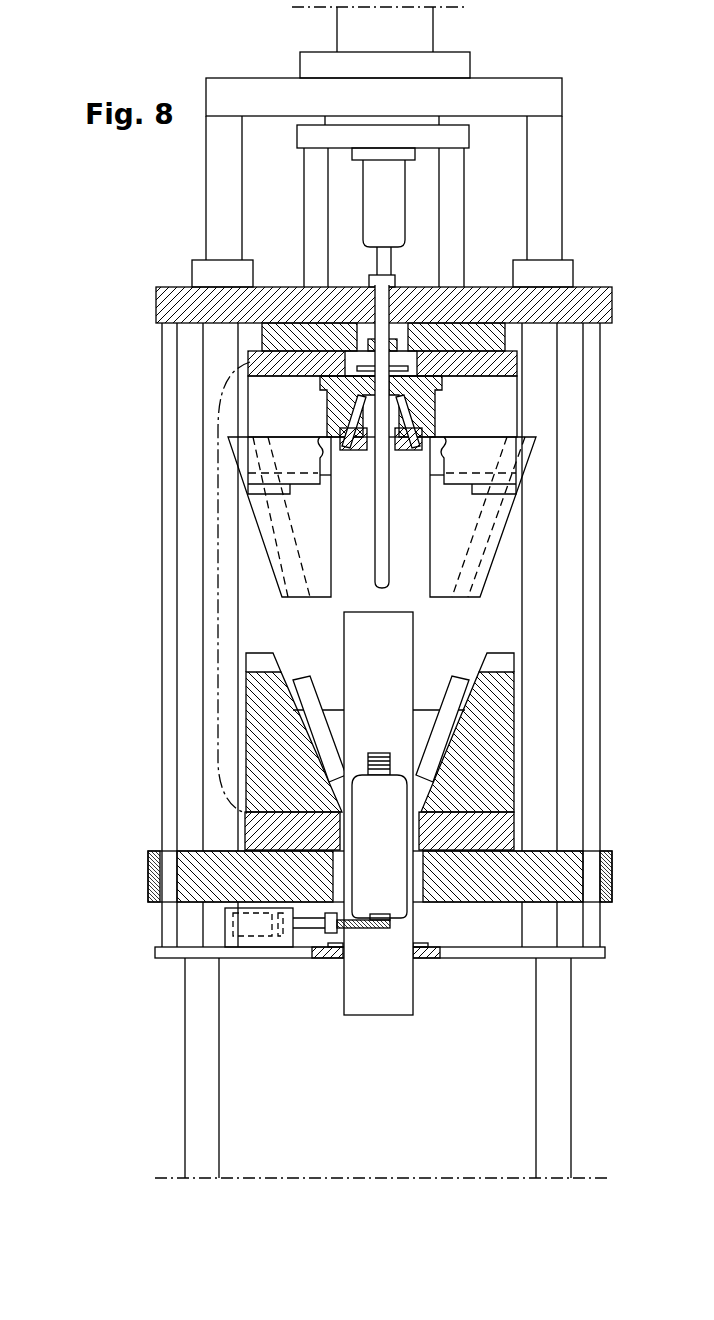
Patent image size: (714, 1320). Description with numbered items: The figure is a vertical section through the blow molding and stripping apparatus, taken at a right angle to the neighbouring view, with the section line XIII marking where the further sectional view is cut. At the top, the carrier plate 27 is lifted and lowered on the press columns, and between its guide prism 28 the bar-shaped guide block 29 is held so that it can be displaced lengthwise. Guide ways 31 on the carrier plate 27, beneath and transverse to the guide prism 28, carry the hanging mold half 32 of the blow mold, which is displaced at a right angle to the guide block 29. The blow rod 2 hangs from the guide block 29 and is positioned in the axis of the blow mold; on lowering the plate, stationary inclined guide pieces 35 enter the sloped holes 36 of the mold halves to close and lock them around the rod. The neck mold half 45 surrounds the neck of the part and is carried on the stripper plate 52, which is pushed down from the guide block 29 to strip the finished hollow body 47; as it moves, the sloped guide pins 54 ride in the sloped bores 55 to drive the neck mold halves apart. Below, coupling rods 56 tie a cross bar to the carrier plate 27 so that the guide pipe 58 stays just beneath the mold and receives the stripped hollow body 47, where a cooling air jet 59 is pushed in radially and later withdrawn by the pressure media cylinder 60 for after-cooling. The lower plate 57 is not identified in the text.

The blow rod 2 is at (374, 530).
The carrier plate 27 is at (250, 362).
The guide prism 28 is at (325, 399).
The guide block 29 is at (323, 420).
The guide ways 31 is at (248, 494).
The mold half 32 is at (320, 548).
The inclined guide piece 35 is at (303, 693).
The sloped hole 36 is at (275, 570).
The neck mold half 45 is at (402, 450).
The hollow body 47 is at (396, 866).
The stripper plate 52 is at (322, 460).
The sloped guide pin 54 is at (438, 411).
The sloped bore 55 is at (433, 457).
The coupling rod 56 is at (165, 730).
The thin plate 57 is at (155, 950).
The guide pipe 58 is at (344, 636).
The cooling air jet 59 is at (370, 927).
The pressure media cylinder 60 is at (225, 918).
The section line XIII- XIII is at (218, 651).